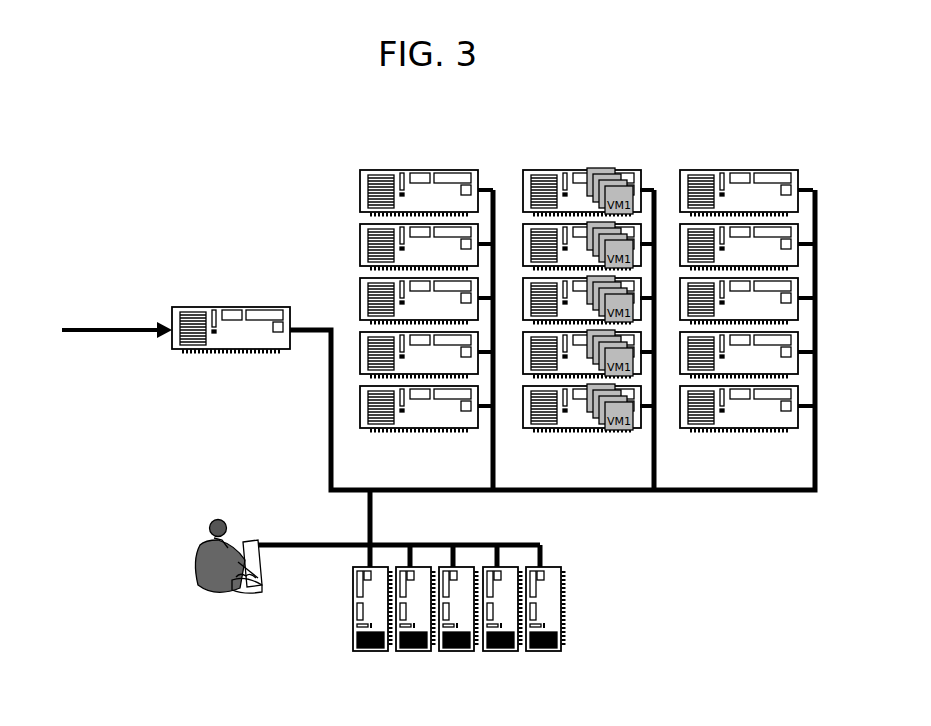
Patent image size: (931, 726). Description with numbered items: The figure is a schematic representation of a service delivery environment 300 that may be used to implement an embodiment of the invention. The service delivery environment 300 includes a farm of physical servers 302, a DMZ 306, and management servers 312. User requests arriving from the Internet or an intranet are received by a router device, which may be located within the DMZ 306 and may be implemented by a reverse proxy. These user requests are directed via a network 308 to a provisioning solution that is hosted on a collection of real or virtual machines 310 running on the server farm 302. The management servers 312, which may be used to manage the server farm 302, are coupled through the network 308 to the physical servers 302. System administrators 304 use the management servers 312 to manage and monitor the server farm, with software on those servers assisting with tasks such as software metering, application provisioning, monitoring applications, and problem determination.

The service delivery environment 300 is at (490, 114).
The server farm 302 is at (797, 160).
The system administrators 304 is at (236, 592).
The DMZ 306 is at (203, 305).
The network 308 is at (690, 492).
The virtual machines 310 is at (616, 432).
The management servers 312 is at (567, 621).